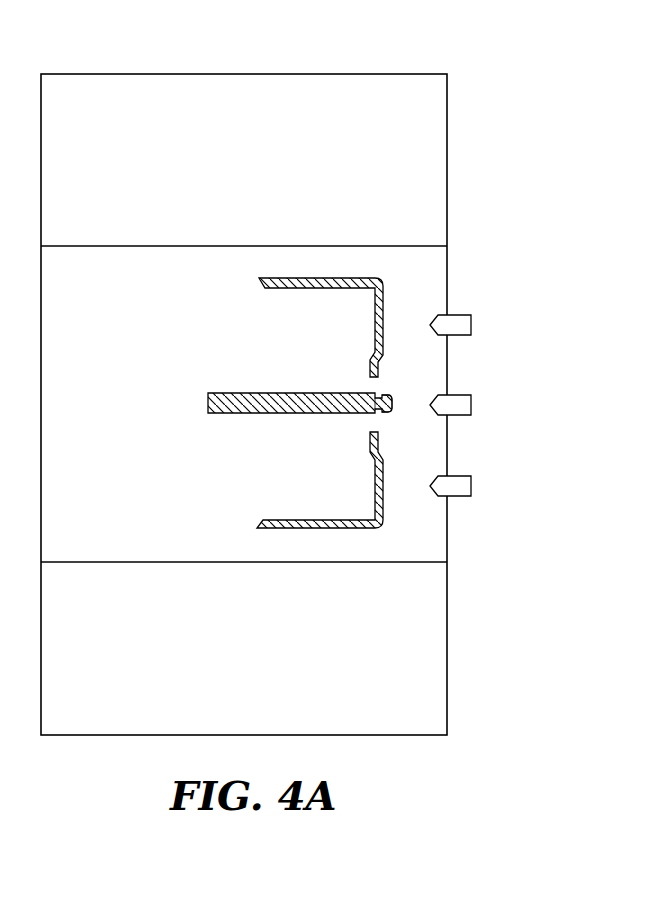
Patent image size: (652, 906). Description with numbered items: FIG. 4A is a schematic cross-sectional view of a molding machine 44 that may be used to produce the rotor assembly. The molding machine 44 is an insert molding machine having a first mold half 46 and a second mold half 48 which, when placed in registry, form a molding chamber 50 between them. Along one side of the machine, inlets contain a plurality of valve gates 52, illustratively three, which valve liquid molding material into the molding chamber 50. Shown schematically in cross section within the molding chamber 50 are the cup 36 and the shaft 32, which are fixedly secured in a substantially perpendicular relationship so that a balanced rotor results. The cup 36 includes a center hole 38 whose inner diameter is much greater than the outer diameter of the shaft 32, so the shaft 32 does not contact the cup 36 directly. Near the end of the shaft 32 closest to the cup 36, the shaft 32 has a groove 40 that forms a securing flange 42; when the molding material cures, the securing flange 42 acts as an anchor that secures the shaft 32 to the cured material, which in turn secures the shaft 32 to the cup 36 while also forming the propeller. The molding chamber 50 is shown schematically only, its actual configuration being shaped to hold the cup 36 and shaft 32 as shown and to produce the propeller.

The shaft 32 is at (228, 393).
The cup 36 is at (375, 341).
The center hole 38 is at (369, 423).
The groove 40 is at (380, 420).
The securing flange 42 is at (390, 395).
The molding machine 44 is at (427, 68).
The first mold half 46 is at (449, 170).
The second mold half 48 is at (420, 634).
The molding chamber 50 is at (144, 488).
The valve gates 52 is at (471, 325).